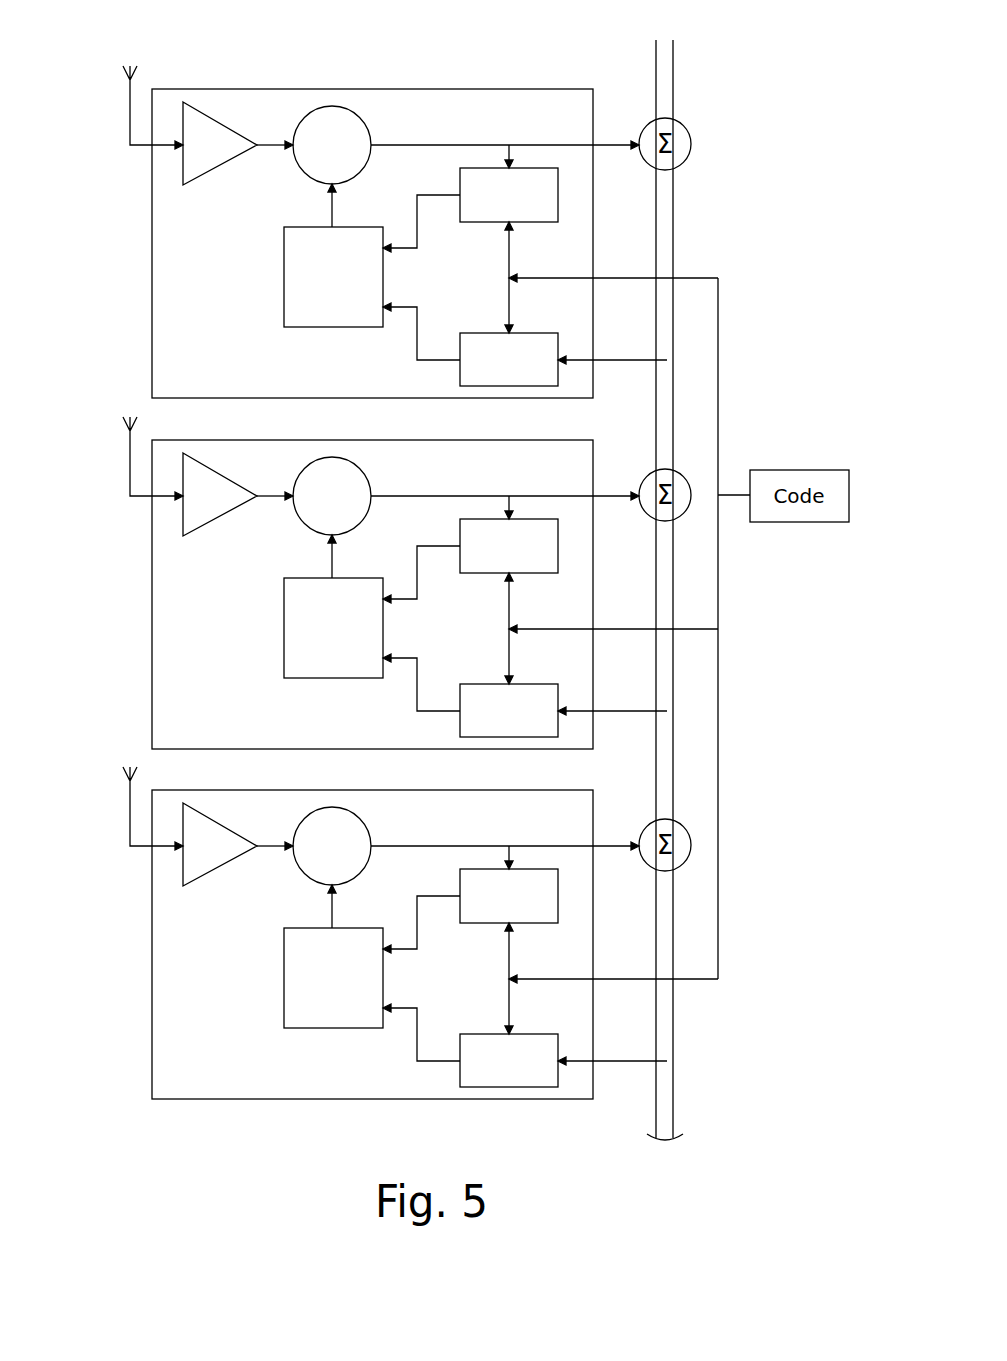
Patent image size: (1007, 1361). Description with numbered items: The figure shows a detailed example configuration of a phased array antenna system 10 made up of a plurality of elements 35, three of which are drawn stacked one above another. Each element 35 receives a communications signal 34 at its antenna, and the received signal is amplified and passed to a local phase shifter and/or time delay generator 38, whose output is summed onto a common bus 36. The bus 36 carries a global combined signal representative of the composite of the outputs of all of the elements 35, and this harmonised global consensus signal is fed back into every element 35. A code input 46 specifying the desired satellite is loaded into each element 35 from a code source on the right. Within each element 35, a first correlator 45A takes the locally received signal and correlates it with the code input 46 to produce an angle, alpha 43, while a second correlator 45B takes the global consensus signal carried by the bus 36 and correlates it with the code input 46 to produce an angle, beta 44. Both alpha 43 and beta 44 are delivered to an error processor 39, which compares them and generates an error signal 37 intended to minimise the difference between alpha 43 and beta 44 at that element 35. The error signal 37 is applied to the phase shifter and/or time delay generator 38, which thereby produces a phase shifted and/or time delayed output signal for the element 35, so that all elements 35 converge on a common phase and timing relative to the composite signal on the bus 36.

The phased array antenna system 10 is at (66, 20).
The communications signal 34 is at (136, 458).
The element 35 is at (372, 594).
The bus 36 is at (665, 576).
The error signal 37 is at (314, 556).
The phase shifter and/or time delay generator 38 is at (466, 495).
The error processor 39 is at (333, 627).
The angle alpha 43 is at (421, 574).
The angle beta 44 is at (421, 684).
The first correlator 45A is at (509, 545).
The second correlator 45B is at (563, 710).
The code input 46 is at (593, 628).